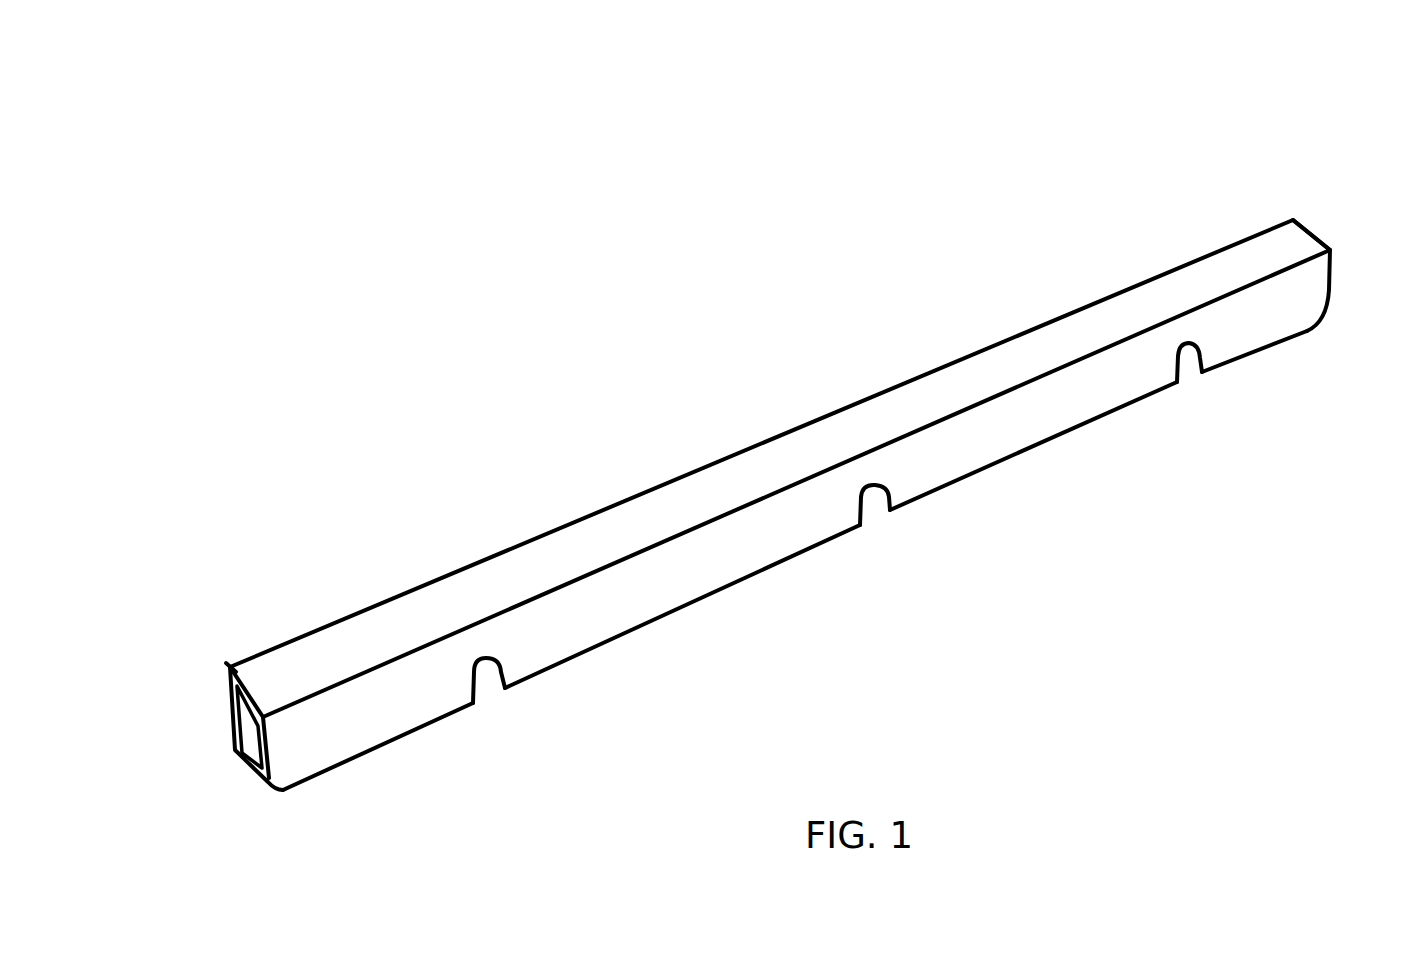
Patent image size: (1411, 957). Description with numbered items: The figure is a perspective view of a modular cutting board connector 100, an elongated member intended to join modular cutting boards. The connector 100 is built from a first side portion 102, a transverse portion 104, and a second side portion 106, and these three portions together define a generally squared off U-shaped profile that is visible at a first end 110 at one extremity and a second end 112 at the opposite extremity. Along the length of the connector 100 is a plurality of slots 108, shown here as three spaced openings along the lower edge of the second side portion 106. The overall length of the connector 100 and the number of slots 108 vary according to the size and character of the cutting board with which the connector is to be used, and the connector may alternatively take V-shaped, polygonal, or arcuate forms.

The modular cutting board connector 100 is at (775, 413).
The first side portion 102 is at (228, 708).
The transverse portion 104 is at (512, 575).
The second side portion 106 is at (670, 588).
The slots 108 is at (490, 663).
The first end 110 is at (229, 668).
The second end 112 is at (1313, 232).